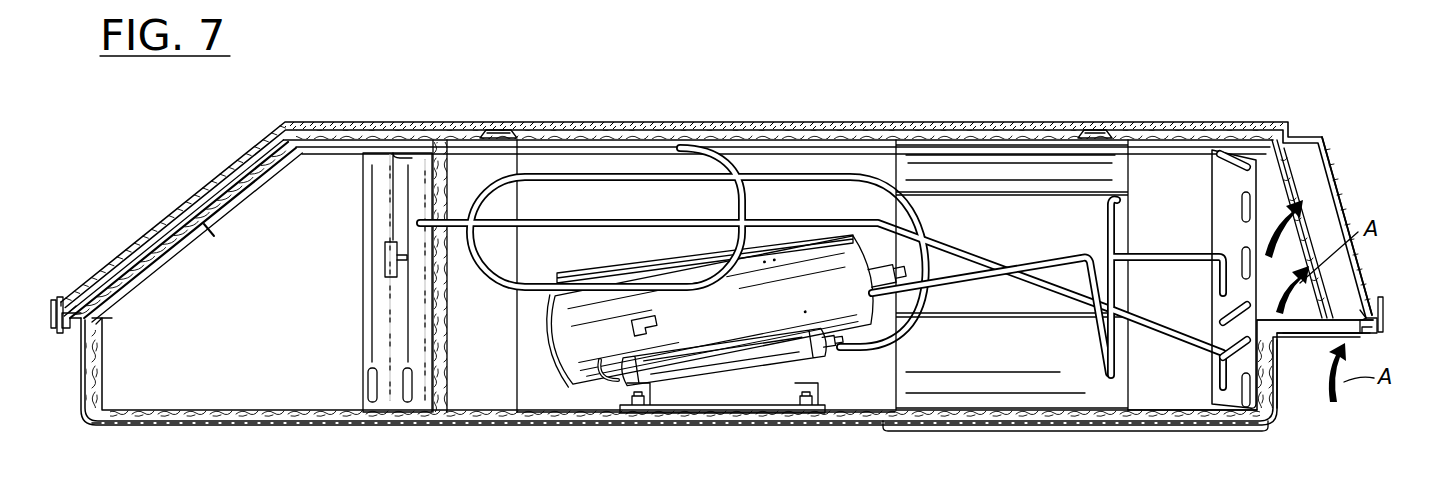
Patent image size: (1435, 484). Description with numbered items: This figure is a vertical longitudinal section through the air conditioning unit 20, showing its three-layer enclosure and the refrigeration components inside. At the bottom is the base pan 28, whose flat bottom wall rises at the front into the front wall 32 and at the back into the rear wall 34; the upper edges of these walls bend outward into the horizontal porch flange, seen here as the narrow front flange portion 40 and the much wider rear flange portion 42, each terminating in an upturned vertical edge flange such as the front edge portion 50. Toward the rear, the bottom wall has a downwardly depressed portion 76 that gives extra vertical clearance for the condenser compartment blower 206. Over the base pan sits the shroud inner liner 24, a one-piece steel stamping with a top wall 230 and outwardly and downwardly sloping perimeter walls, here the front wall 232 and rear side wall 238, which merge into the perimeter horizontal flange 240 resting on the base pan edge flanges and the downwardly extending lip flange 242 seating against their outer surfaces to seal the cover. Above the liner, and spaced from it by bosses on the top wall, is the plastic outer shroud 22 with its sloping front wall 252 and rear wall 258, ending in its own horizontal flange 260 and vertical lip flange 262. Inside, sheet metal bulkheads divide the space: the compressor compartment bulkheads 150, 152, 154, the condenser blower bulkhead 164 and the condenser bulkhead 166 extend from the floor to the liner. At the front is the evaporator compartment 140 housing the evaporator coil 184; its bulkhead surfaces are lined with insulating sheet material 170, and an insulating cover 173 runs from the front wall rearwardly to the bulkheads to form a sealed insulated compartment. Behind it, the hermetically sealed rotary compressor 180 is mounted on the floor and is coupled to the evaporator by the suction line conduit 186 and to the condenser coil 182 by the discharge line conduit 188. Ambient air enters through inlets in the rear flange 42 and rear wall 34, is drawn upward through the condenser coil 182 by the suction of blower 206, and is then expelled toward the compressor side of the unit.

The air conditioning unit 20 is at (712, 195).
The outer shroud 22 is at (110, 258).
The shroud inner liner 24 is at (200, 207).
The front wall 252 is at (168, 246).
The perimeter horizontal flange 260 is at (60, 296).
The vertical lip flange 262 is at (50, 306).
The perimeter horizontal flange 240 is at (122, 300).
The front edge flange portion 50 is at (106, 321).
The front flange portion 40 is at (69, 330).
The front wall 32 is at (82, 383).
The base pan 28 is at (186, 428).
The top wall 230 is at (330, 146).
The cover 173 is at (348, 165).
The front wall 232 is at (214, 236).
The evaporator compartment 140 is at (262, 290).
The evaporator coil 184 is at (356, 323).
The insulating sheet material 170 is at (440, 304).
The compressor compartment bulkhead 150 is at (450, 355).
The compressor compartment bulkhead 152 is at (490, 410).
The compressor compartment bulkhead 154 is at (560, 408).
The suction line conduit 186 is at (792, 176).
The rotary compressor 180 is at (842, 346).
The discharge line conduit 188 is at (1014, 262).
The condenser blower bulkhead 164 is at (1124, 290).
The condenser compartment blower 206 is at (1012, 136).
The condenser coil 182 is at (1163, 160).
The rear side wall 238 is at (1298, 182).
The rear wall 258 is at (1342, 212).
The lip flange 242 is at (1385, 303).
The rear flange portion 42 is at (1348, 333).
The rear wall 34 is at (1282, 386).
The condenser bulkhead 166 is at (1190, 396).
The depressed portion 76 is at (1012, 432).